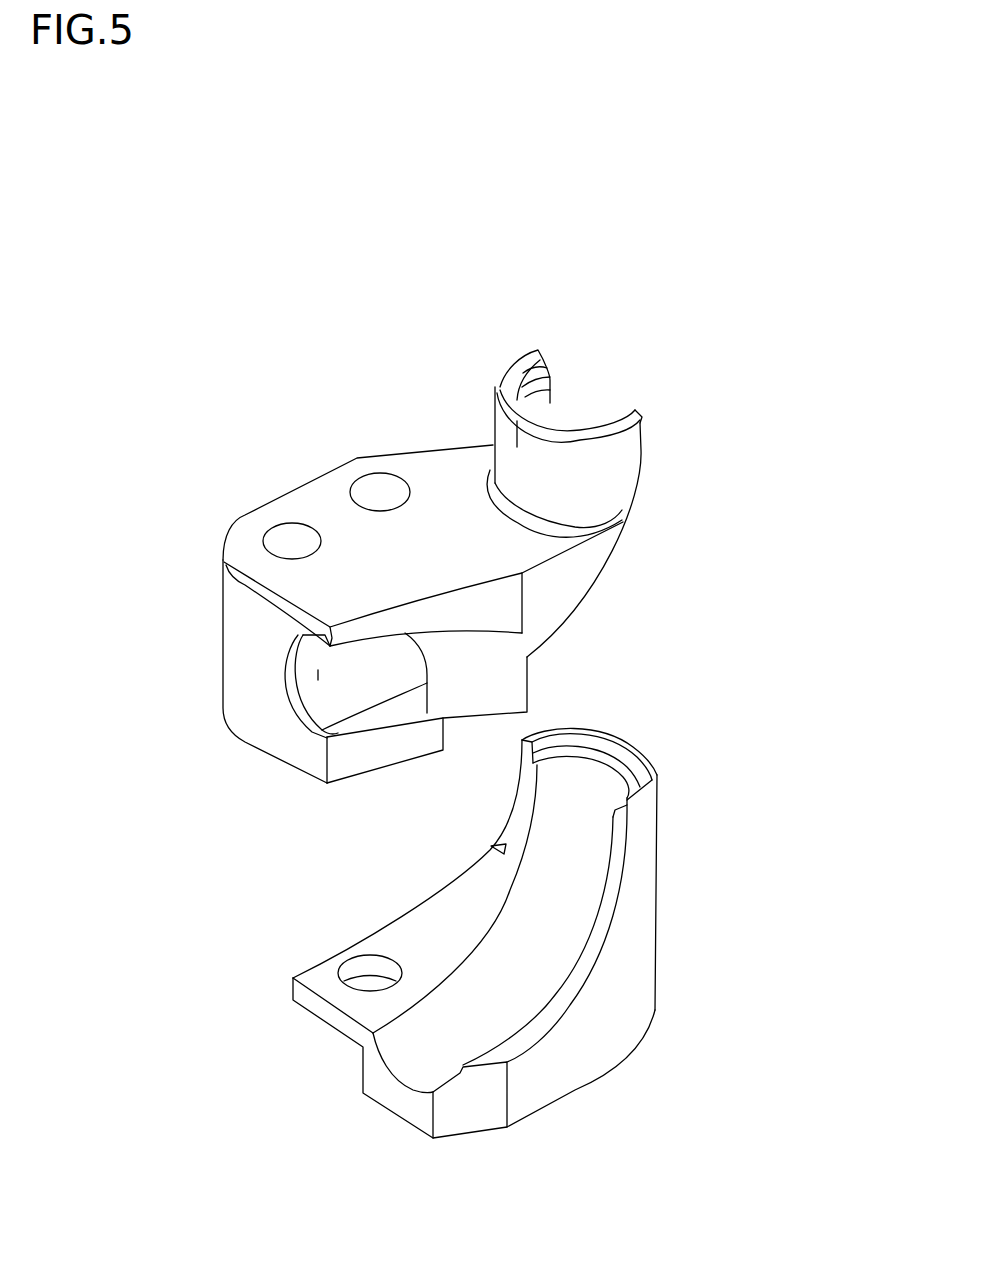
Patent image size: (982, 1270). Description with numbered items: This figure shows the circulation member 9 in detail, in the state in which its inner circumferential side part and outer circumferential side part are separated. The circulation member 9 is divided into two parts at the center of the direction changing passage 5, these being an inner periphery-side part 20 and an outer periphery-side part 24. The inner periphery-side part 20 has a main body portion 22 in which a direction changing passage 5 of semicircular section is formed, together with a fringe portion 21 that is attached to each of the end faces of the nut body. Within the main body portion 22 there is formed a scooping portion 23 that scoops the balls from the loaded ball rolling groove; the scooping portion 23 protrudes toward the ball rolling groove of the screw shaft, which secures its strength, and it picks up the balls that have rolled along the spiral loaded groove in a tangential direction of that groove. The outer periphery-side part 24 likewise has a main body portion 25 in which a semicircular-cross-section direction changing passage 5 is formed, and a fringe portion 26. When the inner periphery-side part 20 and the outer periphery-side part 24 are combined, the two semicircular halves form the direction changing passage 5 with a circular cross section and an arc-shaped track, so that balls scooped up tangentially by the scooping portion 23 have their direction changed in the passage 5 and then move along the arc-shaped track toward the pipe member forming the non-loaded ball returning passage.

The direction changing passage 5 is at (573, 407).
The circulation member 9 is at (726, 556).
The inner periphery-side part 20 is at (515, 262).
The fringe portion 21 is at (428, 470).
The main body portion 22 is at (515, 407).
The scooping portion 23 is at (333, 725).
The outer periphery-side part 24 is at (803, 913).
The main body portion 25 is at (653, 913).
The fringe portion 26 is at (437, 957).